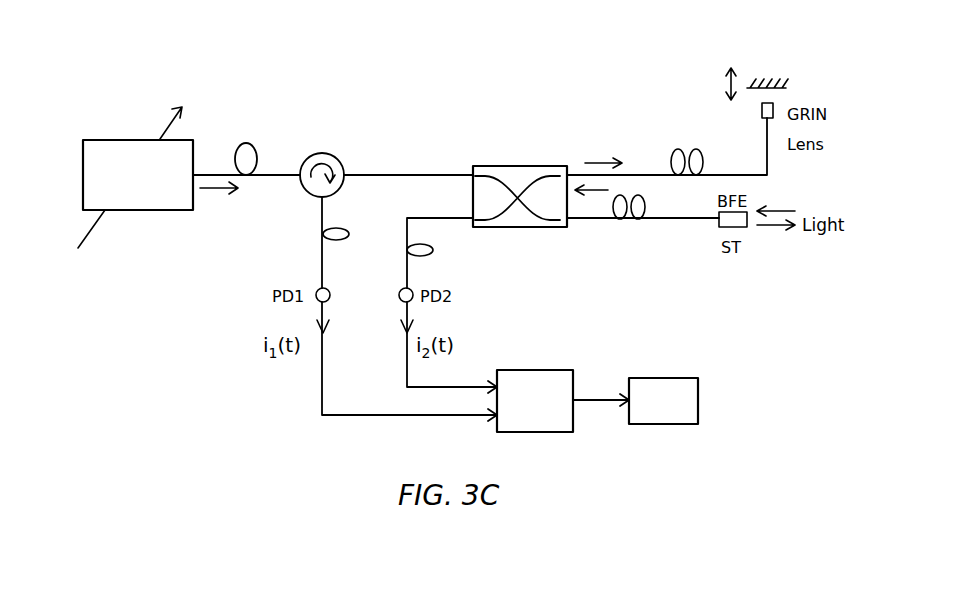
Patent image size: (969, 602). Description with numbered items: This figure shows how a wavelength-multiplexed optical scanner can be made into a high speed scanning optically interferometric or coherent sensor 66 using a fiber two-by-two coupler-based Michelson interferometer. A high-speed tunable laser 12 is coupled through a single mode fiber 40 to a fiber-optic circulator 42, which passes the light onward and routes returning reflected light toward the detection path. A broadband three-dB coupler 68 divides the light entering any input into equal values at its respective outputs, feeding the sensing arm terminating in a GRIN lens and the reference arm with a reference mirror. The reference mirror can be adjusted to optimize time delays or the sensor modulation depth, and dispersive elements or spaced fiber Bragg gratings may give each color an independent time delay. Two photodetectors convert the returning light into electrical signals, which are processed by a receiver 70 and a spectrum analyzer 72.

The tunable laser 12 is at (183, 140).
The fiber 40 is at (273, 177).
The fiber-optic circulator 42 is at (323, 153).
The coherent sensor 66 is at (758, 51).
The 3-dB coupler 68 is at (533, 166).
The receiver 70 is at (538, 370).
The spectrum analyzer 72 is at (663, 378).